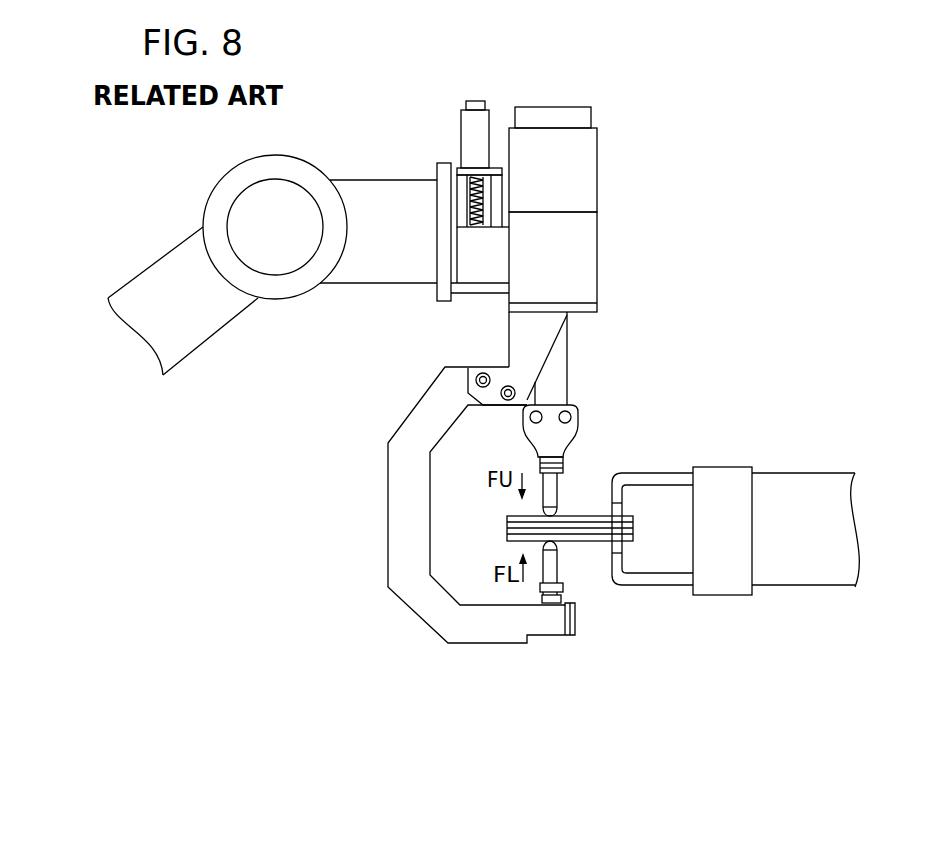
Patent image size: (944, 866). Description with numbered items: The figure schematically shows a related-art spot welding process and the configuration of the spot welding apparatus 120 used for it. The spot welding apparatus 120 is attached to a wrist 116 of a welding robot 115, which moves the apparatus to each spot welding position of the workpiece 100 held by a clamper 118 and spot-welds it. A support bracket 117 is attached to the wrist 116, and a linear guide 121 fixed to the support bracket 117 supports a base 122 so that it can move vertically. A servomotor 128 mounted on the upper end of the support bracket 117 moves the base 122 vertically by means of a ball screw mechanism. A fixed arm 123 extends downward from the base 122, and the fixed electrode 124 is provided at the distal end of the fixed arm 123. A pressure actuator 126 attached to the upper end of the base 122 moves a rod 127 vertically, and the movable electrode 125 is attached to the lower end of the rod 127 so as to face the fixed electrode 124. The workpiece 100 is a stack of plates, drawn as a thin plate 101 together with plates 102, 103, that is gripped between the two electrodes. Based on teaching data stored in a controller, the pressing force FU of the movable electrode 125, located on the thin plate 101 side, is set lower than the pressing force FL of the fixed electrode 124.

The workpiece 100 is at (541, 573).
The thin plate 101 is at (507, 518).
The middle plate 102 is at (507, 527).
The lower plate 103 is at (507, 538).
The welding robot 115 is at (153, 237).
The wrist 116 is at (353, 190).
The support bracket 117 is at (440, 289).
The clamper 118 is at (725, 587).
The spot welding apparatus 120 is at (660, 118).
The linear guide 121 is at (458, 171).
The base 122 is at (585, 257).
The fixed arm 123 is at (397, 507).
The fixed electrode 124 is at (553, 563).
The movable electrode 125 is at (552, 488).
The pressure actuator 126 is at (585, 170).
The rod 127 is at (567, 358).
The servomotor 128 is at (468, 127).